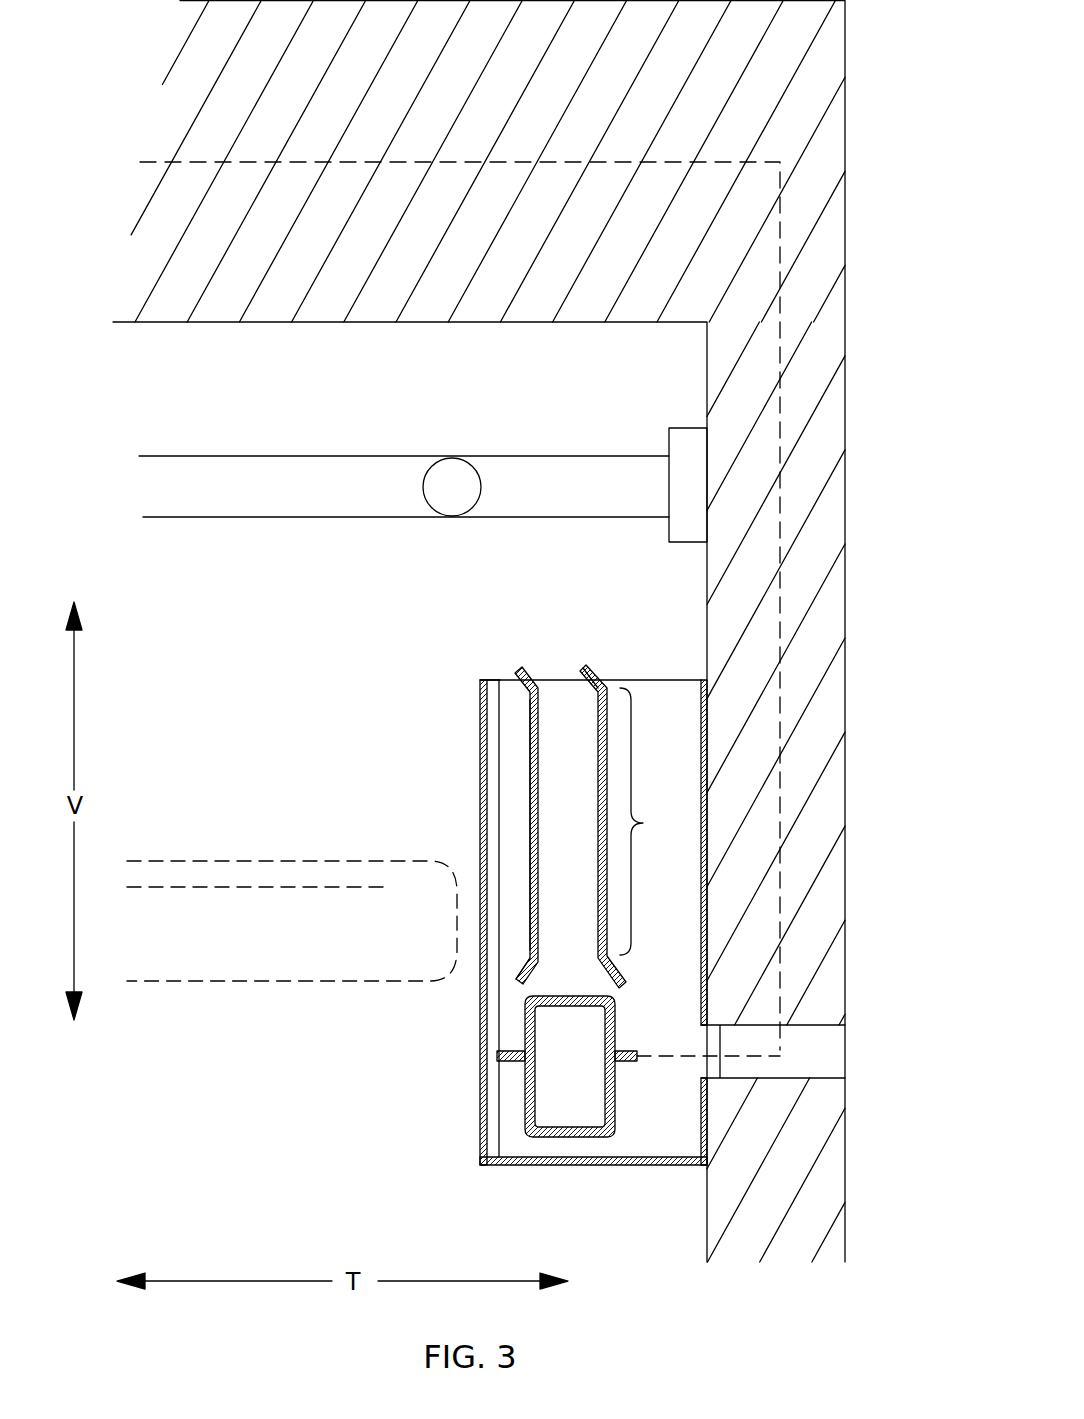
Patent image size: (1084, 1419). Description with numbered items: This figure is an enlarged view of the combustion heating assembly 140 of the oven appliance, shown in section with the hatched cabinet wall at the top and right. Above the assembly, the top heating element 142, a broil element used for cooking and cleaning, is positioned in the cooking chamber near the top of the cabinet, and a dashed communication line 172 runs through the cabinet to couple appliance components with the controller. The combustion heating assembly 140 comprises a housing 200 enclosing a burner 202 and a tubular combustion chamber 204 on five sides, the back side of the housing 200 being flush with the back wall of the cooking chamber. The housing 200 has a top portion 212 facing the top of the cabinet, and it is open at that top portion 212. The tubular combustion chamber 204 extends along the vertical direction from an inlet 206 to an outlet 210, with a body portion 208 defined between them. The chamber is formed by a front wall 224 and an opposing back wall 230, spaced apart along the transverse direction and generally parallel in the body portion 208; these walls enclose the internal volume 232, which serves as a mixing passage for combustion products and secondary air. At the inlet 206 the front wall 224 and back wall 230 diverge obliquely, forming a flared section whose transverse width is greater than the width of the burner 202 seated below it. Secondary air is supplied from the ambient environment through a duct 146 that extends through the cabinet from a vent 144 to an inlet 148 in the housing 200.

The combustion heating assembly 140 is at (395, 1043).
The top heating element 142 is at (295, 507).
The vent 144 is at (870, 1053).
The duct 146 is at (813, 1025).
The inlet 148 is at (680, 1082).
The communication line 172 is at (783, 323).
The housing 200 is at (593, 1167).
The burner 202 is at (525, 1107).
The tubular combustion chamber 204 is at (512, 762).
The inlet 206 is at (508, 958).
The body portion 208 is at (656, 821).
The outlet 210 is at (605, 675).
The top portion 212 is at (492, 663).
The front wall 224 is at (530, 830).
The back wall 230 is at (622, 978).
The internal volume 232 is at (590, 852).